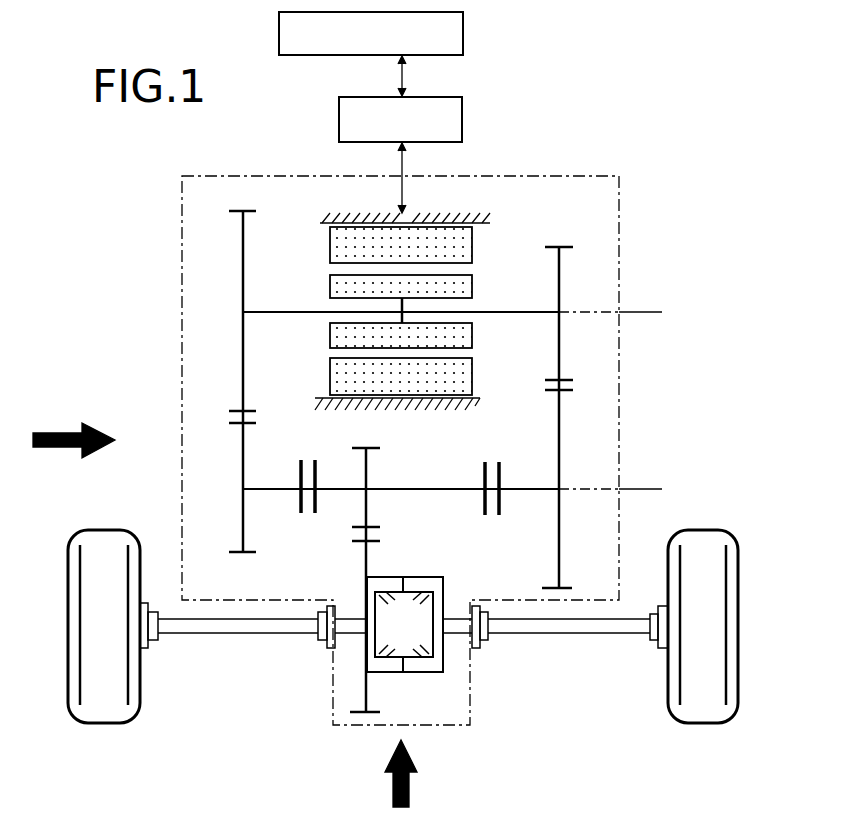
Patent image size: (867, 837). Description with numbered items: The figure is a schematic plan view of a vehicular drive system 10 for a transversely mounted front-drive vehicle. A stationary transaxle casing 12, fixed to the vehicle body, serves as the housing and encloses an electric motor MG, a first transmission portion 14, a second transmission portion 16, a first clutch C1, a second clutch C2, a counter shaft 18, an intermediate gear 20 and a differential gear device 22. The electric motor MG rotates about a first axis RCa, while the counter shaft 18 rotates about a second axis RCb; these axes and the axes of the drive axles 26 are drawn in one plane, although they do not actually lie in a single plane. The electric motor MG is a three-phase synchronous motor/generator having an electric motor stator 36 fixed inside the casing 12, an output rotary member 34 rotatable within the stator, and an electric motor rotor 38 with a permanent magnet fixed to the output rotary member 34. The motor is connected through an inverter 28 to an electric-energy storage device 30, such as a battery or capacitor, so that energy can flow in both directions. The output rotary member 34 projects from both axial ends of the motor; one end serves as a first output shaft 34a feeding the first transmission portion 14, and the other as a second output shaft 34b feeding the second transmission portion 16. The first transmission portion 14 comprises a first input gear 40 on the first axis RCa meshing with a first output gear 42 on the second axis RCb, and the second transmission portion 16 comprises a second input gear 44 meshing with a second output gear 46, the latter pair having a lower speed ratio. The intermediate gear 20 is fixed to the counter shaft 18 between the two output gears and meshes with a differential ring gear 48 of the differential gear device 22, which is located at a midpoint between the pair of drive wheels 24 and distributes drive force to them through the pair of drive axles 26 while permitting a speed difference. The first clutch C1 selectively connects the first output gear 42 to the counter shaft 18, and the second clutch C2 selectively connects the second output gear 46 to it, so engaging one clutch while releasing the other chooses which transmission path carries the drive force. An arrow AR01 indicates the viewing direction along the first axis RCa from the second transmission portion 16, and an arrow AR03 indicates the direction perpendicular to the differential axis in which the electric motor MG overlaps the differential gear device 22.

The vehicular drive system 10 is at (635, 68).
The transaxle casing 12 is at (596, 176).
The first transmission portion 14 is at (561, 238).
The second transmission portion 16 is at (241, 562).
The counter shaft 18 is at (405, 488).
The intermediate gear 20 is at (375, 447).
The differential gear device 22 is at (411, 686).
The drive wheels 24 is at (105, 718).
The drive axles 26 is at (245, 633).
The inverter 28 is at (462, 119).
The electric-energy storage device 30 is at (463, 33).
The output rotary member 34 is at (481, 318).
The first output shaft 34a is at (483, 310).
The second output shaft 34b is at (318, 312).
The electric motor stator 36 is at (330, 258).
The electric motor rotor 38 is at (330, 283).
The first input gear 40 is at (573, 378).
The first output gear 42 is at (573, 394).
The second input gear 44 is at (236, 410).
The second output gear 46 is at (236, 426).
The differential ring gear 48 is at (355, 720).
The electric motor MG is at (497, 248).
The first clutch C1 is at (493, 455).
The second clutch C2 is at (310, 452).
The first axis RCa is at (650, 312).
The second axis RCb is at (650, 489).
The arrow AR01 is at (65, 433).
The arrow AR03 is at (409, 780).